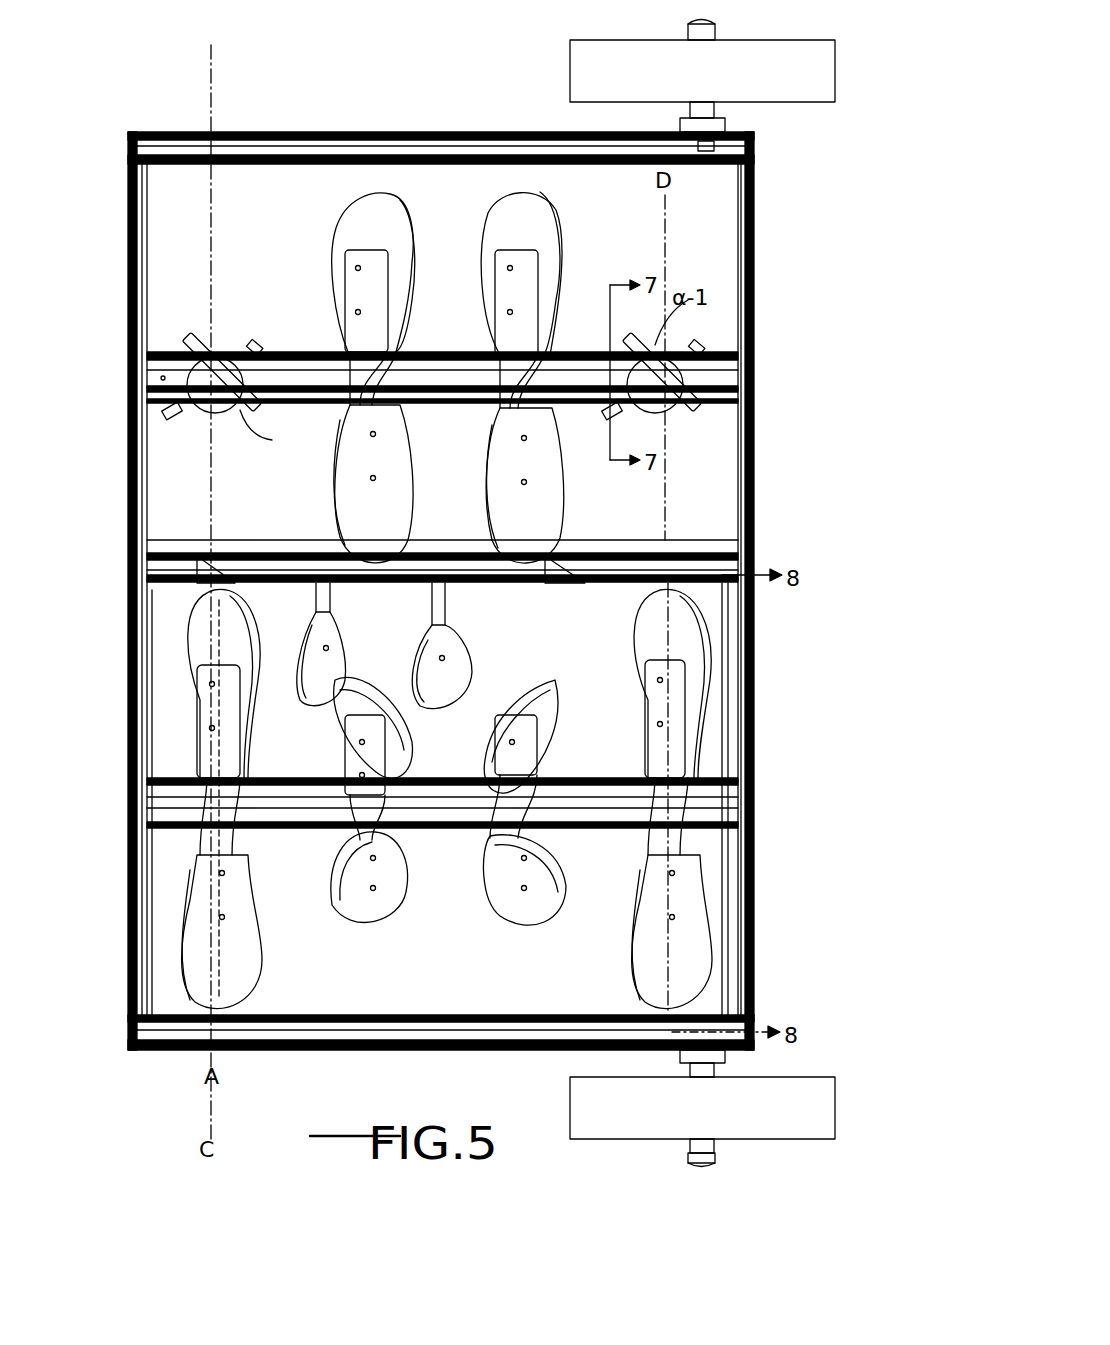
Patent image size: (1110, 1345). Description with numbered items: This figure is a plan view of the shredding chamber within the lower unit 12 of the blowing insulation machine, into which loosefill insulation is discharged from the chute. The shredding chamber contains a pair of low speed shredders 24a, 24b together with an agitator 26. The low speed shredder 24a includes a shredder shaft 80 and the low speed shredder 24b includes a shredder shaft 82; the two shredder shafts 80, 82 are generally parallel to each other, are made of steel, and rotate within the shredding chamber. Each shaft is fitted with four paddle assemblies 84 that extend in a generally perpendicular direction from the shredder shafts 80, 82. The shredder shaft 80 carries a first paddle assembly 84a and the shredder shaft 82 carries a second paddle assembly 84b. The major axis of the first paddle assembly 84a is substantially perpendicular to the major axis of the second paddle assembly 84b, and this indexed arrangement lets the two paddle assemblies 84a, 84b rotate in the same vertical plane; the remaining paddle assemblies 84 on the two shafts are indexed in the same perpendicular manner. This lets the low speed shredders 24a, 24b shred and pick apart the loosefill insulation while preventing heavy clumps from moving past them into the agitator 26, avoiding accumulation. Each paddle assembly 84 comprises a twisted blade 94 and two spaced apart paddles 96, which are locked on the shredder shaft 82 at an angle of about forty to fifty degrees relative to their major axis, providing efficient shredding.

The lower unit 12 is at (123, 160).
The low speed shredder 24a is at (705, 768).
The low speed shredder 24b is at (724, 348).
The agitator 26 is at (640, 553).
The shredder shaft 80 is at (290, 775).
The shredder shaft 82 is at (310, 352).
The paddle assembly 84 is at (518, 188).
The first paddle assembly 84a is at (232, 1012).
The second paddle assembly 84b is at (215, 412).
The blade 94 is at (690, 384).
The paddle 96 is at (700, 410).